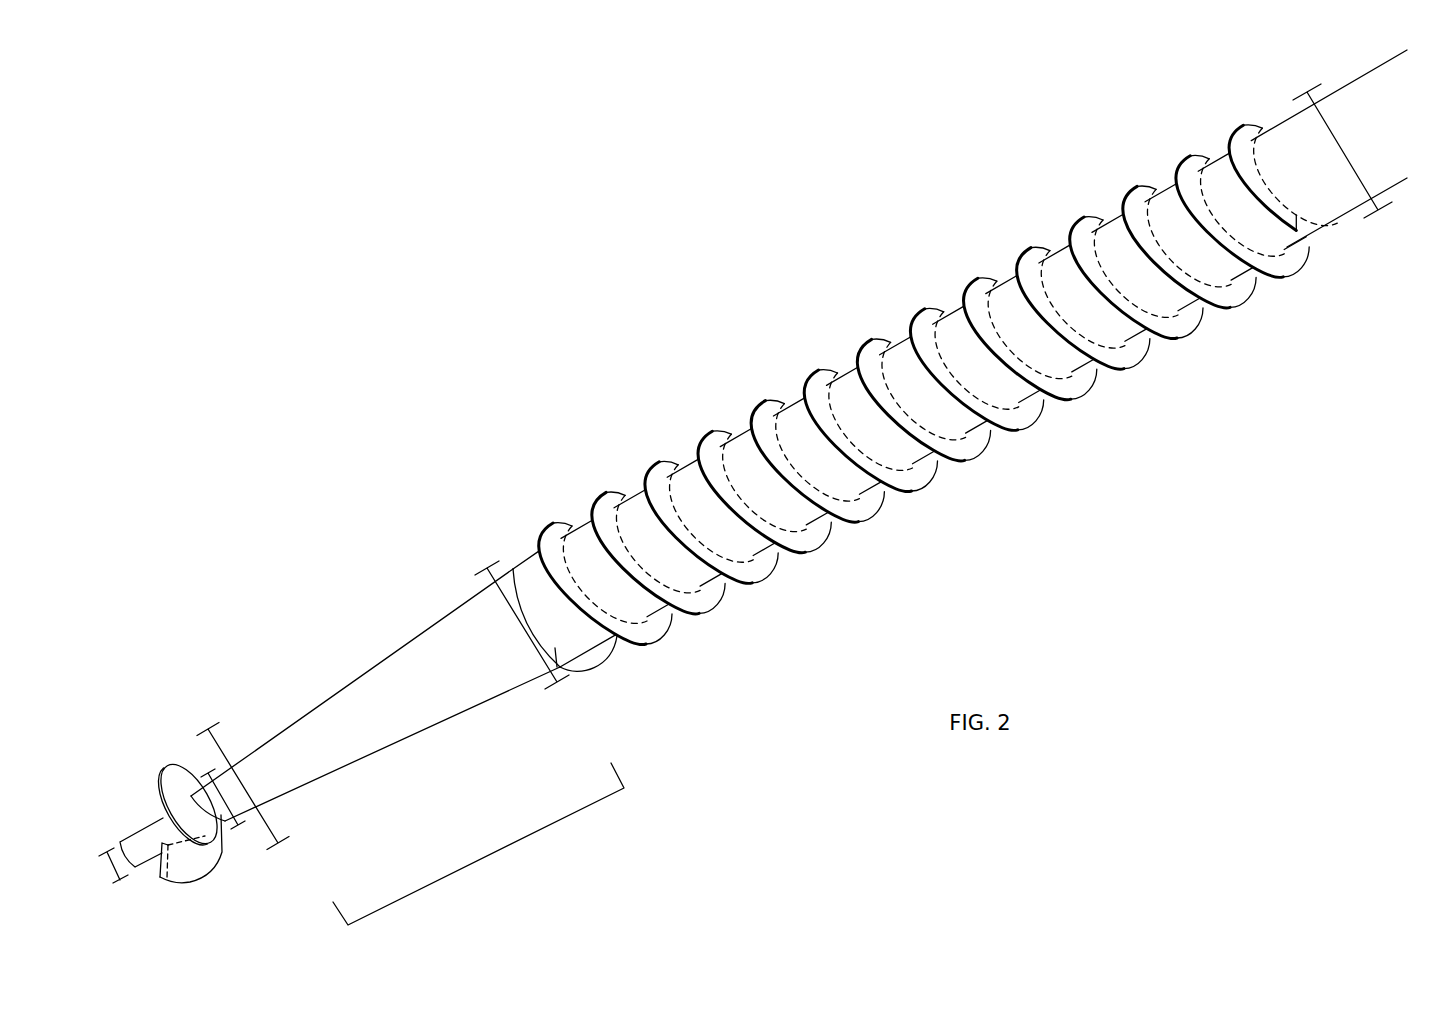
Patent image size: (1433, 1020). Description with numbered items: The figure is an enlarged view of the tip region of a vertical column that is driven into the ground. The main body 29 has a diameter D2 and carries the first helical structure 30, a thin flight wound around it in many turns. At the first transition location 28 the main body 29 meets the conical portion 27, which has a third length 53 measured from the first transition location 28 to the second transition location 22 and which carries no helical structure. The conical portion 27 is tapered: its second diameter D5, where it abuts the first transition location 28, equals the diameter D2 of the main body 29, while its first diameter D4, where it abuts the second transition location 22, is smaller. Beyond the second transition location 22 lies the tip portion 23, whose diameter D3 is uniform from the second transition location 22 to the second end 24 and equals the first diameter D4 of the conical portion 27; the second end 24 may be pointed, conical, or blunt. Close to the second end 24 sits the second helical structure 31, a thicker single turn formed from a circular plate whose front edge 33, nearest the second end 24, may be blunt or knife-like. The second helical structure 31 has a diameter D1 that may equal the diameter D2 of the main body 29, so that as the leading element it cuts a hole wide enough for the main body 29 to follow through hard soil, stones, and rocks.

The second transition location 22 is at (223, 822).
The tip portion 23 is at (158, 828).
The second end 24 is at (118, 843).
The conical portion 27 is at (352, 698).
The first transition location 28 is at (523, 558).
The main body 29 is at (1320, 215).
The first helical structure 30 is at (558, 527).
The second helical structure 31 is at (197, 862).
The front edge 33 is at (162, 878).
The third length 53 is at (488, 857).
The diameter of the second helical structure D1 is at (227, 738).
The diameter of the main body D2 is at (1347, 148).
The diameter of the tip portion D3 is at (110, 867).
The first diameter of the conical portion D4 is at (237, 792).
The second diameter of the conical portion D5 is at (538, 675).